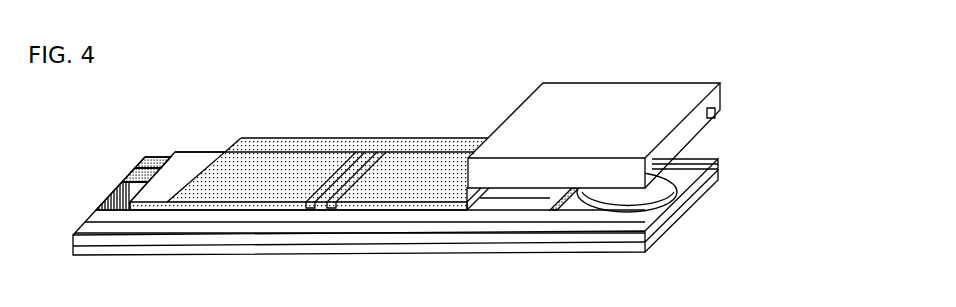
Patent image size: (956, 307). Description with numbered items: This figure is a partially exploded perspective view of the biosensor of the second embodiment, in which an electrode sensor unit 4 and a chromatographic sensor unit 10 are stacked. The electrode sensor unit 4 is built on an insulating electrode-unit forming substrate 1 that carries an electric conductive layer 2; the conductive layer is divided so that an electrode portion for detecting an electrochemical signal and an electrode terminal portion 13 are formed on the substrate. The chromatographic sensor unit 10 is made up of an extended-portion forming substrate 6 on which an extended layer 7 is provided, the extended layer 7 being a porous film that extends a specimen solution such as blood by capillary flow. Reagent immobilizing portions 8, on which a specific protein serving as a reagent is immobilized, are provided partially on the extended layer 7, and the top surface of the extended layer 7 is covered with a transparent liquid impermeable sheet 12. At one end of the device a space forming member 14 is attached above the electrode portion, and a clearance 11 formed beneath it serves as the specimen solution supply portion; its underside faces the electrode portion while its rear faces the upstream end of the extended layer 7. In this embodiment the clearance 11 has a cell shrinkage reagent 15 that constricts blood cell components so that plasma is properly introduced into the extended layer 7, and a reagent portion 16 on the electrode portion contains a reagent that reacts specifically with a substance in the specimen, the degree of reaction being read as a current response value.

The electrode-unit forming substrate 1 is at (73, 249).
The electric conductive layer 2 is at (118, 188).
The electrode sensor unit 4 is at (192, 265).
The extended-portion forming substrate 6 is at (143, 214).
The extended layer 7 is at (190, 157).
The reagent immobilizing portions 8 is at (348, 150).
The chromatographic sensor unit 10 is at (211, 124).
The clearance 11 is at (718, 182).
The transparent liquid impermeable sheet 12 is at (445, 140).
The electrode terminal portion 13 is at (96, 210).
The space forming member 14 is at (678, 92).
The cell shrinkage reagent 15 is at (715, 115).
The reagent portion 16 is at (663, 180).